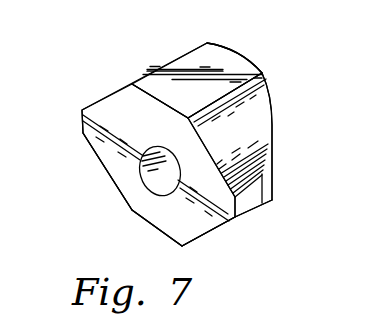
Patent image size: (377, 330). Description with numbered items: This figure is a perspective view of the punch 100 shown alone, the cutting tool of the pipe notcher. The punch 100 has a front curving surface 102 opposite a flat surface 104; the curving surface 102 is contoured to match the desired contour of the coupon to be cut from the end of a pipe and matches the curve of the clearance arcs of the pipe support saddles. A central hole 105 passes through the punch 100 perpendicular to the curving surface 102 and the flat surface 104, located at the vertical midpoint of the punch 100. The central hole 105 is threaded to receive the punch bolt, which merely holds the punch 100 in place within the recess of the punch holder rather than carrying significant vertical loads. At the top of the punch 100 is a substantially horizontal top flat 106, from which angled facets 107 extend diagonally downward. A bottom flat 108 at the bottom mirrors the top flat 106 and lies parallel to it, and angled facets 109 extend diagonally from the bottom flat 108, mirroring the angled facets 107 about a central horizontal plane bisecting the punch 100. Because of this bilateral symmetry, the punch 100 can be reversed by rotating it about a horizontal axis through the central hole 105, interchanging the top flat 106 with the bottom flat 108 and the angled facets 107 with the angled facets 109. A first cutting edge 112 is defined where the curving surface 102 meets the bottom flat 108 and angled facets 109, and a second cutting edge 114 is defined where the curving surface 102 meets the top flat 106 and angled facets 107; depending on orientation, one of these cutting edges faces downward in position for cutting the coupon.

The punch 100 is at (110, 37).
The front curving surface 102 is at (272, 108).
The flat surface 104 is at (153, 130).
The central hole 105 is at (154, 168).
The top flat 106 is at (217, 57).
The angled facets 107 is at (132, 84).
The bottom flat 108 is at (157, 228).
The angled facets 109 is at (99, 159).
The first cutting edge 112 is at (272, 200).
The second cutting edge 114 is at (262, 73).